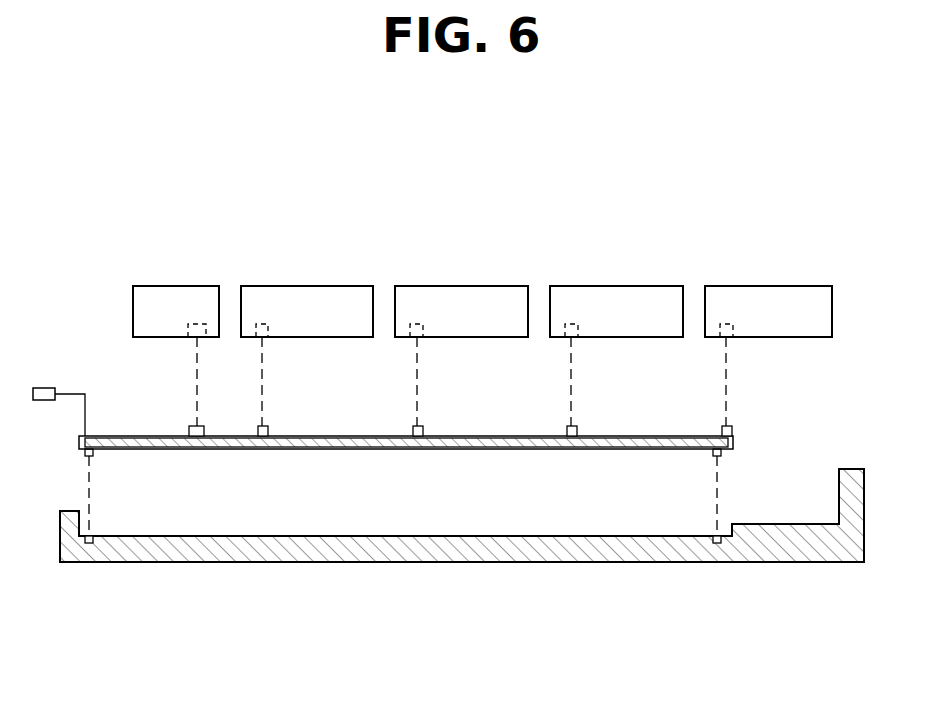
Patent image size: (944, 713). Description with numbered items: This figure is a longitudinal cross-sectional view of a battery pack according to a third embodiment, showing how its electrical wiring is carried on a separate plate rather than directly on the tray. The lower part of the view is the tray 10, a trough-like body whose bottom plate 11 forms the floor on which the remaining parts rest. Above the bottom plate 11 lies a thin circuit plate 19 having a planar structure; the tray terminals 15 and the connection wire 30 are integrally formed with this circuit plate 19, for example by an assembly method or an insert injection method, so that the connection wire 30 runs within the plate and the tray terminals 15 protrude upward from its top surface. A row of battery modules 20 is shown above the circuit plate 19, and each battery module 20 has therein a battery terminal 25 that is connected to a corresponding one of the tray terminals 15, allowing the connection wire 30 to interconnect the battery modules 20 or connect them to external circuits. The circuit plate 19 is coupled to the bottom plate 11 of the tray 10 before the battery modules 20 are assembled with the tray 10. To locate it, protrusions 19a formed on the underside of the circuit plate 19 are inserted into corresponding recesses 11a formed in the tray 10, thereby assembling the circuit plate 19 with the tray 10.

The tray 10 is at (316, 568).
The bottom plate 11 is at (400, 535).
The recesses 11a is at (88, 544).
The tray terminals 15 is at (189, 432).
The circuit plate 19 is at (615, 437).
The protrusions 19a is at (93, 452).
The battery modules 20 is at (305, 282).
The battery terminal 25 is at (266, 324).
The connection wire 30 is at (325, 437).